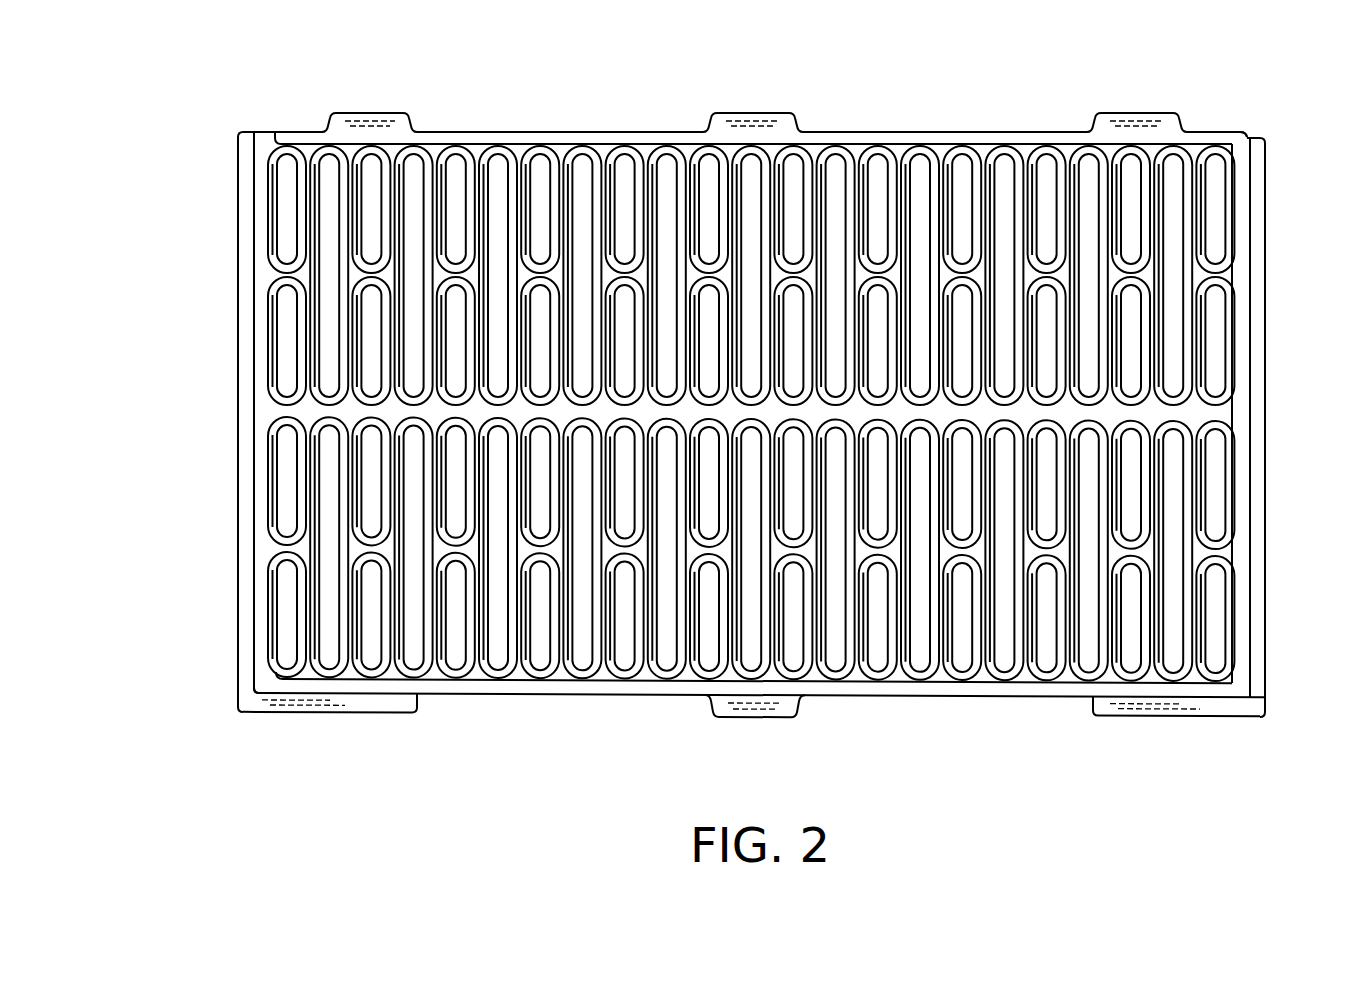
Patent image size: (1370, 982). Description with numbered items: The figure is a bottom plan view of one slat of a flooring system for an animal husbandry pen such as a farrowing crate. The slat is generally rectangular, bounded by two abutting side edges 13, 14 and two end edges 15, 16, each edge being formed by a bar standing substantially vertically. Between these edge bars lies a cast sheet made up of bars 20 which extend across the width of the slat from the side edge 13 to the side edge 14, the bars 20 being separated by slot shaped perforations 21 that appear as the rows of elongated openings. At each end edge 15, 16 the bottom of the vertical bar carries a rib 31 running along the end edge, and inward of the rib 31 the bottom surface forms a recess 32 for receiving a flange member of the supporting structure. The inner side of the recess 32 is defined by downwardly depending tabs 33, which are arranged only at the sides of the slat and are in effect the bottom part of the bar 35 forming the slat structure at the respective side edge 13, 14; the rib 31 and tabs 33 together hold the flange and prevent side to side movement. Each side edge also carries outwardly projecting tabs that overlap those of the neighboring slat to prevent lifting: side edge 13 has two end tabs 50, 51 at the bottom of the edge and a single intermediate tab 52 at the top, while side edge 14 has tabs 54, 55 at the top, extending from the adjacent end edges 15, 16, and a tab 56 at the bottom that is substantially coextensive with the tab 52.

The side edge 13 is at (593, 132).
The side edge 14 is at (607, 694).
The end edge 15 is at (1268, 320).
The end edge 16 is at (234, 334).
The bar 20 is at (830, 178).
The slot shaped perforation 21 is at (926, 176).
The rib 31 is at (243, 497).
The recess 32 is at (1235, 142).
The tab 33 is at (300, 133).
The bar 35 is at (487, 149).
The end tab 50 is at (1123, 113).
The end tab 51 is at (367, 112).
The intermediate tab 52 is at (742, 112).
The tab 54 is at (1208, 718).
The tab 55 is at (372, 712).
The tab 56 is at (762, 716).